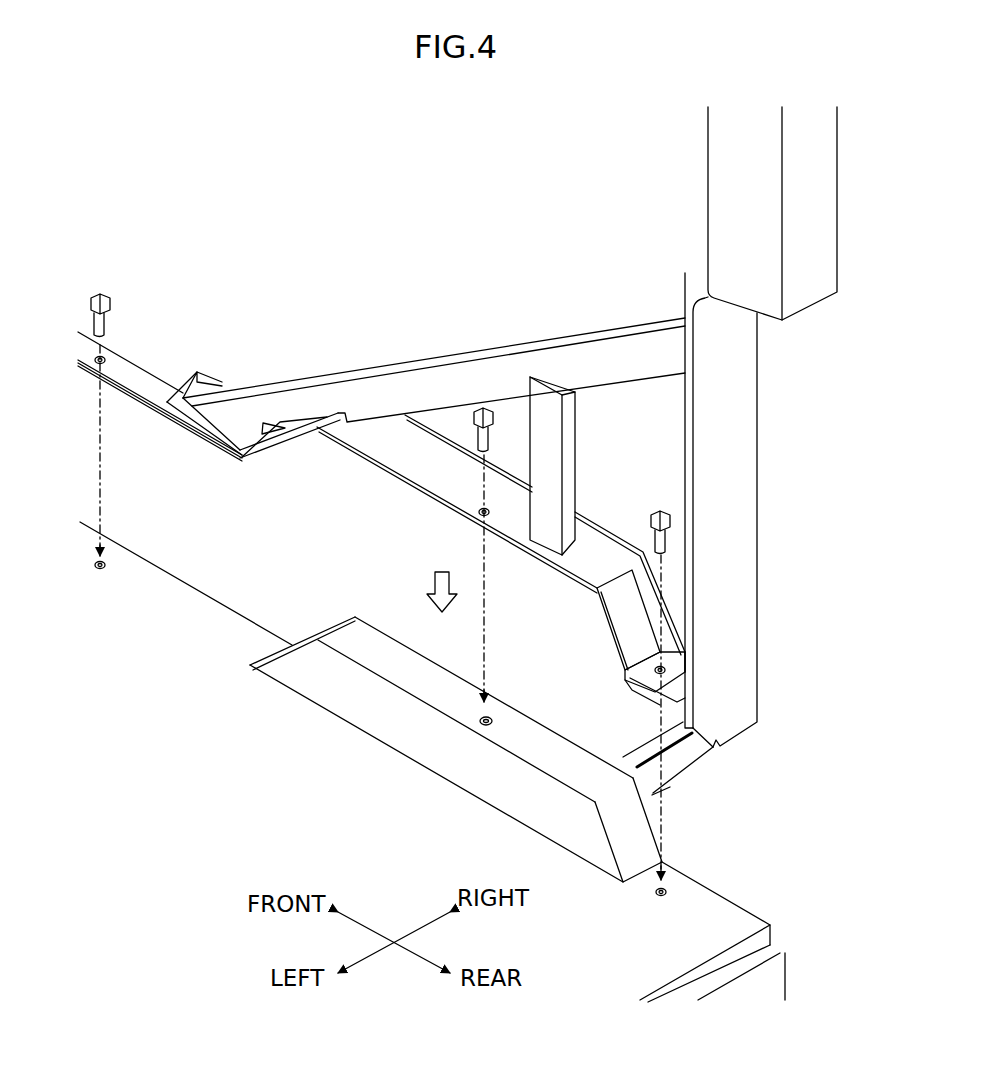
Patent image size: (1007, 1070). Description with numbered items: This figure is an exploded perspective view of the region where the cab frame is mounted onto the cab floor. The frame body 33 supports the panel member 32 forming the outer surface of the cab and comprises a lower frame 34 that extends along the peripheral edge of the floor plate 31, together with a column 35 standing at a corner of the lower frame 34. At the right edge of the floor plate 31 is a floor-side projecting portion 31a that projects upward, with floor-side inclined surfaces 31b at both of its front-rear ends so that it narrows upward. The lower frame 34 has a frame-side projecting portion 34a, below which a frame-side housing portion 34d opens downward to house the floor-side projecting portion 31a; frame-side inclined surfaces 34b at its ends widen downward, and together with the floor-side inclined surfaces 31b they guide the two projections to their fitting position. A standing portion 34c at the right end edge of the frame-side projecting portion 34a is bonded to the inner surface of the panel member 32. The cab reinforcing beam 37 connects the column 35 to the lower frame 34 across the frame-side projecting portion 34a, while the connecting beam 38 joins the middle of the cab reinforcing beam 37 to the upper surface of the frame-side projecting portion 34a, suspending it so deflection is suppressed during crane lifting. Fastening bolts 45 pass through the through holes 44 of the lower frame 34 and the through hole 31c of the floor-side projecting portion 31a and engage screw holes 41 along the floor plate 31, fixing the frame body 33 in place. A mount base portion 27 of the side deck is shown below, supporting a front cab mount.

The mount base portion 27 is at (783, 984).
The floor plate 31 is at (722, 894).
The floor-side projecting portion 31a is at (390, 740).
The floor-side inclined surface 31b is at (298, 640).
The through hole 31c is at (486, 728).
The panel member 32 is at (664, 470).
The frame body 33 is at (782, 366).
The lower frame 34 is at (132, 378).
The frame-side projecting portion 34a is at (590, 550).
The frame-side inclined surface 34b is at (298, 452).
The standing portion 34c is at (676, 612).
The frame-side housing portion 34d is at (394, 500).
The column 35 is at (757, 418).
The cab reinforcing beam 37 is at (405, 347).
The connecting beam 38 is at (575, 430).
The screw hole 41 is at (102, 572).
The through hole 44 is at (108, 392).
The fastening bolt 45 is at (100, 292).